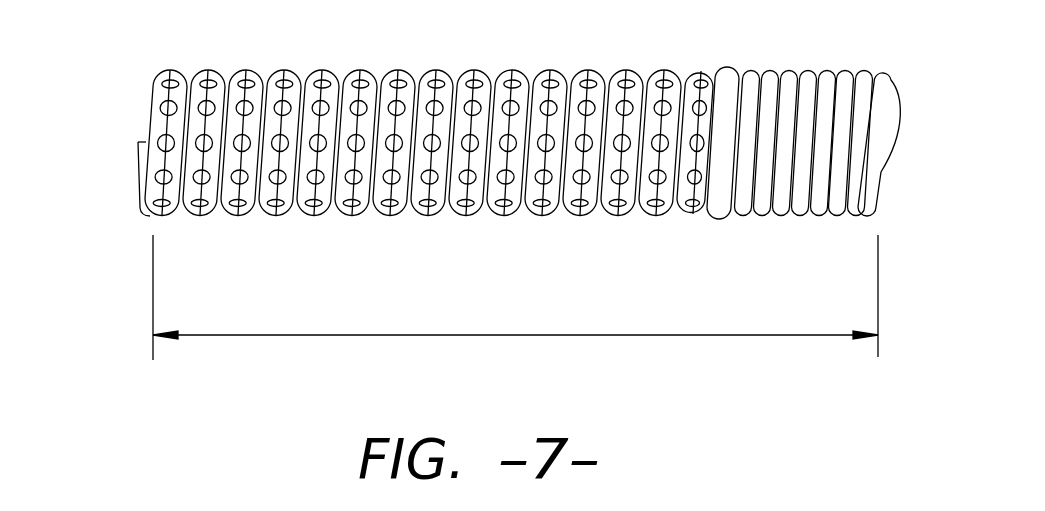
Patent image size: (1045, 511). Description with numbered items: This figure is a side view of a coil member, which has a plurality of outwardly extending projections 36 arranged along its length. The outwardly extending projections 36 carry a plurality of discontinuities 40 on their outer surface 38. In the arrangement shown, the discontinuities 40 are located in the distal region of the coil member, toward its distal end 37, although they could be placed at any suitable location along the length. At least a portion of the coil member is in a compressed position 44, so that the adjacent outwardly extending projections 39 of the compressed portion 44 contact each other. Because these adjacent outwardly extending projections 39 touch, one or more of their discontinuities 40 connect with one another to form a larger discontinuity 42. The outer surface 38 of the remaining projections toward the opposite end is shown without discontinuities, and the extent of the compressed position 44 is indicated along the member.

The outwardly extending projections 36 is at (562, 71).
The distal end 37 is at (139, 142).
The outer surface 38 is at (790, 87).
The adjacent outwardly extending projections 39 is at (553, 216).
The discontinuities 40 is at (208, 78).
The larger discontinuity 42 is at (550, 178).
The compressed position 44 is at (450, 337).